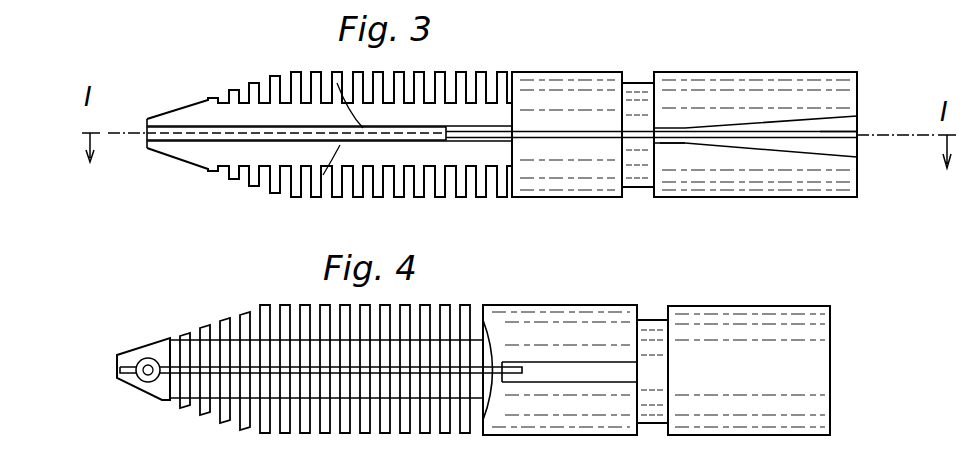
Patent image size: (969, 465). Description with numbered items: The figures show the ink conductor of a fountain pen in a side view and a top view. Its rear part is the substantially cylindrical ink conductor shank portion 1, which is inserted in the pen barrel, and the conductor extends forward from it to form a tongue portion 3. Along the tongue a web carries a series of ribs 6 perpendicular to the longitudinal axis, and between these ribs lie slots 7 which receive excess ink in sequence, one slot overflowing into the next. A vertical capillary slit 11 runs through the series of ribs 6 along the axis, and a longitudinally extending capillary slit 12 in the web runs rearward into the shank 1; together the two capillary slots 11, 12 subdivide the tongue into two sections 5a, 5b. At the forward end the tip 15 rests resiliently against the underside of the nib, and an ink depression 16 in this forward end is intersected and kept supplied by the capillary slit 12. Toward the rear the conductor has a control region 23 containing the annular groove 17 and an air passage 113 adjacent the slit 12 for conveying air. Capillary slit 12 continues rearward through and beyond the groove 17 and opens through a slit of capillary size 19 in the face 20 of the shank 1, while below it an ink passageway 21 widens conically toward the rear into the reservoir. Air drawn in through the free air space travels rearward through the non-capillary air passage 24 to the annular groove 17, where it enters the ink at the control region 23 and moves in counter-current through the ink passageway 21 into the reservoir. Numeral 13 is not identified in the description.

In FIG. 3, the ink conductor shank portion 1 is at (733, 84).
In FIG. 4, the ink conductor shank portion 1 is at (740, 320).
In FIG. 4, the tongue portion 3 is at (585, 316).
In FIG. 3, the upper tongue section 5a is at (194, 113).
In FIG. 3, the lower tongue section 5b is at (199, 157).
In FIG. 4, the ribs 6 is at (185, 409).
In FIG. 4, the slots 7 is at (256, 420).
In FIG. 4, the capillary slit 11 is at (512, 366).
In FIG. 3, the capillary slit 12 is at (542, 140).
In FIG. 3, the core strip 13 is at (188, 140).
In FIG. 4, the tip of the ink conductor 15 is at (119, 355).
In FIG. 4, the ink depression 16 is at (149, 360).
In FIG. 3, the annular groove 17 is at (638, 82).
In FIG. 4, the annular groove 17 is at (650, 320).
In FIG. 3, the slit of capillary size 19 is at (858, 134).
In FIG. 3, the face of shank 20 is at (858, 103).
In FIG. 4, the face of shank 20 is at (832, 347).
In FIG. 3, the ink passageway 21 is at (854, 149).
In FIG. 3, the control region 23 is at (668, 158).
In FIG. 4, the air passage 24 is at (545, 374).
In FIG. 3, the air passage 113 is at (668, 124).